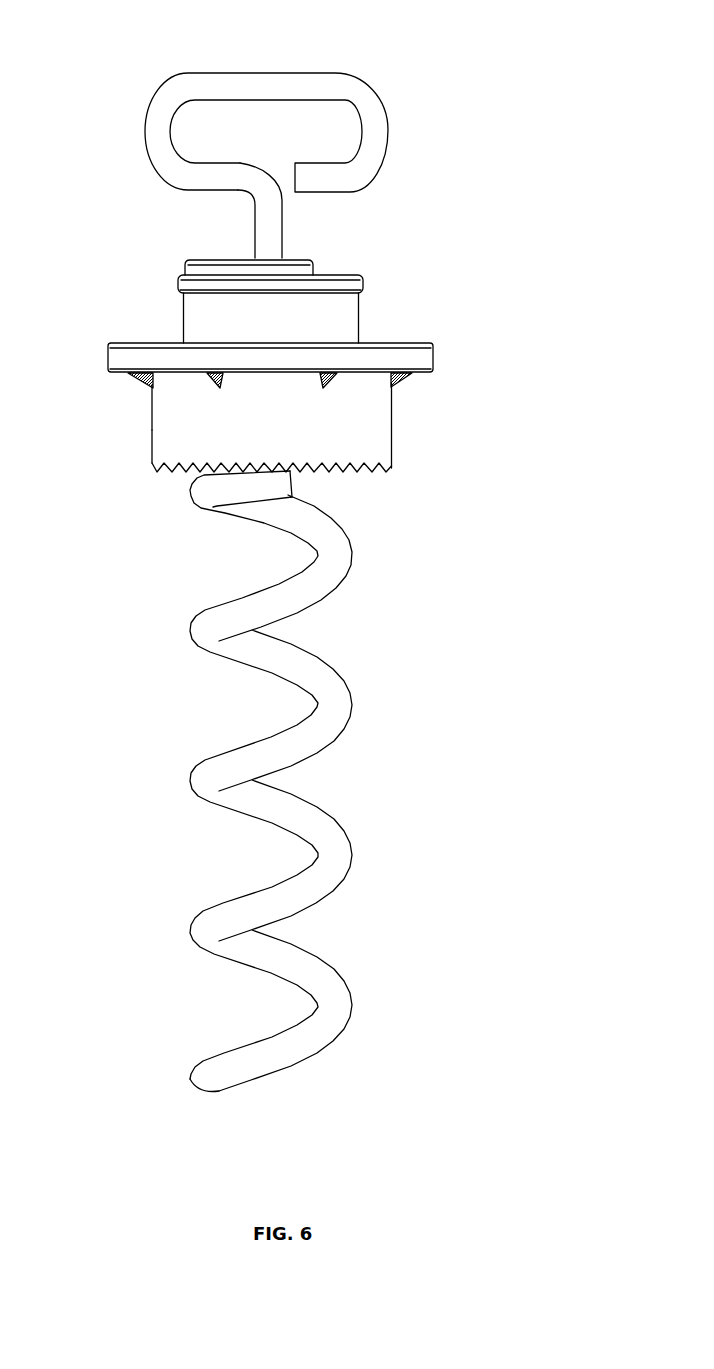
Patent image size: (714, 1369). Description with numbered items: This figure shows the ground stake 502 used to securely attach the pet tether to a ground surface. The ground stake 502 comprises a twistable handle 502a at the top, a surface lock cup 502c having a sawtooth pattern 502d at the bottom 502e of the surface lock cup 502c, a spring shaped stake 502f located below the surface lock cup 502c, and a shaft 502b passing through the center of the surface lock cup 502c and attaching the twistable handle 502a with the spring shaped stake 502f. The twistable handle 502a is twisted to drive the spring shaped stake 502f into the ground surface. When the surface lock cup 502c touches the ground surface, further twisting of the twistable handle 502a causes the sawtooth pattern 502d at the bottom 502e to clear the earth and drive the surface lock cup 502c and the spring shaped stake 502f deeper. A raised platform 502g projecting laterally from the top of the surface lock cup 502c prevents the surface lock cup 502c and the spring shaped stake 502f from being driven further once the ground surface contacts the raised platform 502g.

The ground stake 502 is at (132, 95).
The twistable handle 502a is at (347, 71).
The shaft 502b is at (288, 221).
The surface lock cup 502c is at (403, 405).
The sawtooth pattern 502d is at (386, 473).
The bottom of the surface lock cup 502e is at (384, 449).
The spring shaped stake 502f is at (342, 711).
The raised platform 502g is at (444, 360).